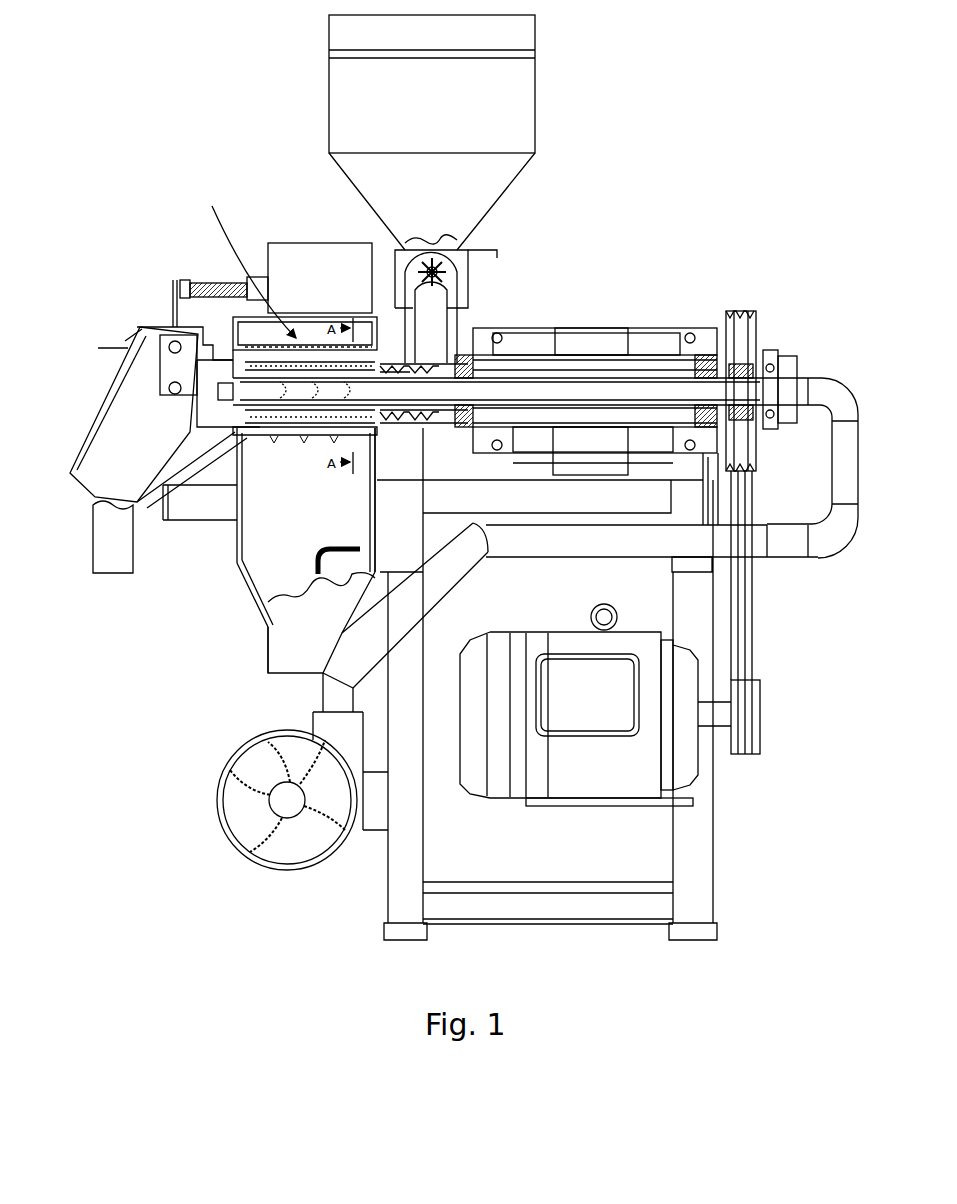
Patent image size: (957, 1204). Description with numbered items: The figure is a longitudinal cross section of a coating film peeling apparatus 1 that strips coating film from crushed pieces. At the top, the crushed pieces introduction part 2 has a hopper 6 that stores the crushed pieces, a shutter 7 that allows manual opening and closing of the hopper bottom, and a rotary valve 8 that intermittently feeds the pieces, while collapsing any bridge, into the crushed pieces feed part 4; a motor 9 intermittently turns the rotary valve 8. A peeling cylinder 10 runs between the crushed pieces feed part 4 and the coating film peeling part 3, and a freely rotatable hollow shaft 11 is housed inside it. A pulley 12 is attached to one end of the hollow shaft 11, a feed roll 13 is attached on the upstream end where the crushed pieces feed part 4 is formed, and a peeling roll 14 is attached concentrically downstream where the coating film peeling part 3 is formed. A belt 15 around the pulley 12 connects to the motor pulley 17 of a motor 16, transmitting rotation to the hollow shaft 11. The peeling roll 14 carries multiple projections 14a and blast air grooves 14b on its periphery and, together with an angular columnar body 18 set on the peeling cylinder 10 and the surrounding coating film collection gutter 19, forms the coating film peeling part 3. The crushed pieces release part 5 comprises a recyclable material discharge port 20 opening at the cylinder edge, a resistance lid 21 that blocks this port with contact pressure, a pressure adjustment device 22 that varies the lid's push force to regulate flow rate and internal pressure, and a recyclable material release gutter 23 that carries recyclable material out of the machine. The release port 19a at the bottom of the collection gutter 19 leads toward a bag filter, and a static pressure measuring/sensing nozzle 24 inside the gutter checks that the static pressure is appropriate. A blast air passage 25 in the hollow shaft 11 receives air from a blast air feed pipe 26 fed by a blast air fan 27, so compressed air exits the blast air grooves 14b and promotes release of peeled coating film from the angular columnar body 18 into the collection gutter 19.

The coating film peeling apparatus 1 is at (720, 176).
The crushed pieces introduction part 2 is at (516, 187).
The coating film peeling part 3 is at (251, 259).
The crushed pieces feed part 4 is at (452, 340).
The crushed pieces release part 5 is at (158, 320).
The hopper 6 is at (525, 95).
The shutter 7 is at (499, 241).
The rotary valve 8 is at (470, 268).
The motor 9 is at (395, 262).
The peeling cylinder 10 is at (392, 356).
The hollow shaft 11 is at (615, 340).
The pulley 12 is at (745, 320).
The feed roll 13 is at (418, 425).
The peeling roll 14 is at (268, 437).
The projections 14a is at (260, 348).
The blast air grooves 14b is at (240, 437).
The belt 15 is at (754, 620).
The motor 16 is at (593, 790).
The motor pulley 17 is at (762, 738).
The angular columnar body 18 is at (290, 440).
The coating film collection gutter 19 is at (233, 322).
The release port 19a is at (320, 678).
The recyclable material discharge port 20 is at (168, 487).
The resistance lid 21 is at (185, 405).
The pressure adjustment device 22 is at (317, 263).
The recyclable material release gutter 23 is at (103, 533).
The static pressure measuring/sensing nozzle 24 is at (345, 548).
The blast air passage 25 is at (565, 388).
The blast air feed pipe 26 is at (825, 395).
The blast air fan 27 is at (222, 836).